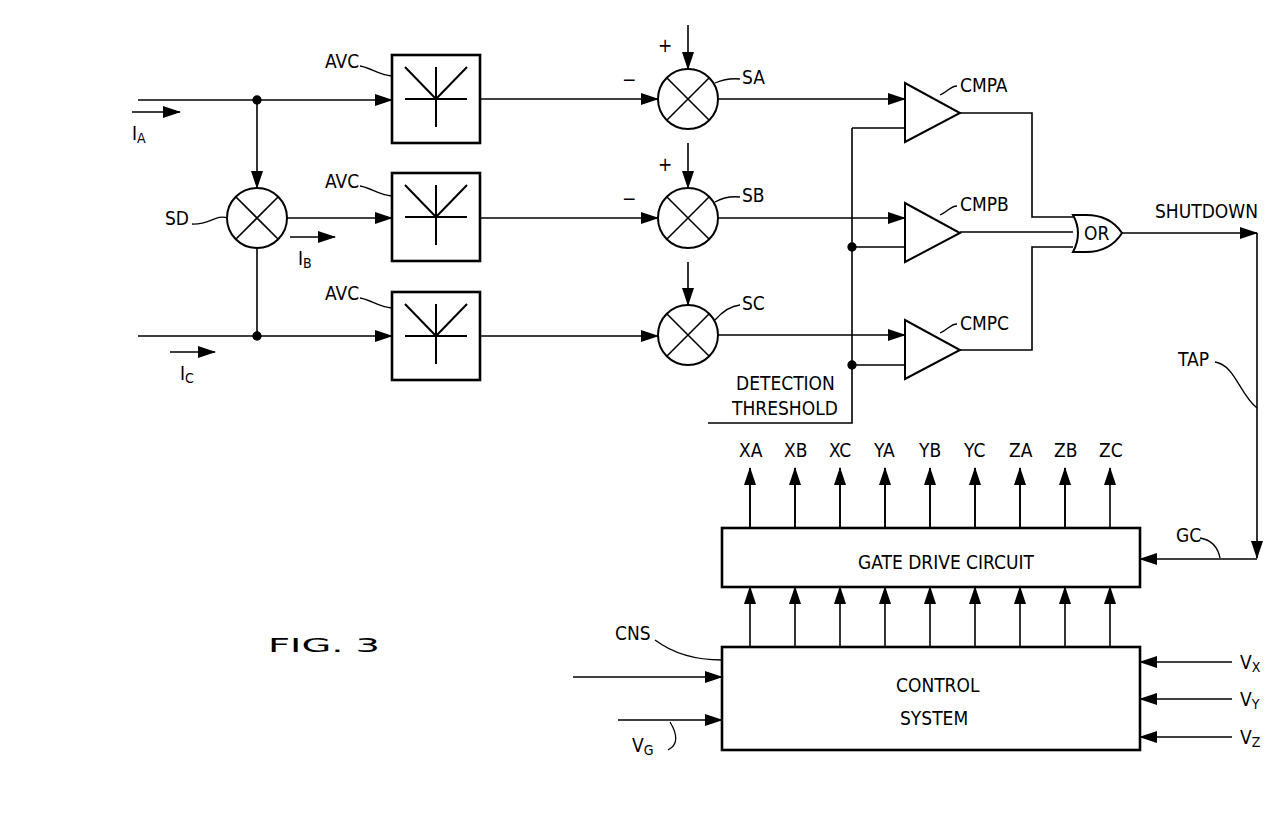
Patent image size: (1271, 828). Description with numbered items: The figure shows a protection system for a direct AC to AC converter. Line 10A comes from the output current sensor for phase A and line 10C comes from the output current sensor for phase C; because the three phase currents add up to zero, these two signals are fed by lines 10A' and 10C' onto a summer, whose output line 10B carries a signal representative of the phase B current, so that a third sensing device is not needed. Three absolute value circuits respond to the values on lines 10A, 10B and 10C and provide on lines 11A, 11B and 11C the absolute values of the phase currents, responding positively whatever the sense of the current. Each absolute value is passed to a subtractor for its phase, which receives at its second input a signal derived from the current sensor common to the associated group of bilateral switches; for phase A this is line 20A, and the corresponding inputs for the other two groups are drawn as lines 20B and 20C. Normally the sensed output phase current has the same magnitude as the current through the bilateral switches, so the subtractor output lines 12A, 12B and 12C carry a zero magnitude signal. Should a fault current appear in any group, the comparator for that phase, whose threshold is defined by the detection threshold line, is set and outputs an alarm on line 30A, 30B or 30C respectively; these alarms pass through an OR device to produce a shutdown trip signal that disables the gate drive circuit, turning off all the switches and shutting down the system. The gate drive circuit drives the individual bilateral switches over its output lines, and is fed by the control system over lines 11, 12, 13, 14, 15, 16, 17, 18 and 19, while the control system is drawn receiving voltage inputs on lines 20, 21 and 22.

The line 10A is at (324, 117).
The line 10A' is at (218, 144).
The line 10B is at (346, 218).
The line 10C is at (324, 349).
The line 10C' is at (220, 292).
The line 11A is at (514, 100).
The line 11B is at (514, 219).
The line 11C is at (514, 337).
The output line 12A is at (782, 100).
The output line 12B is at (782, 219).
The output line 12C is at (782, 335).
The line 20A is at (690, 32).
The reference input B 20B is at (690, 150).
The reference input C 20C is at (690, 268).
The line 30A is at (1032, 180).
The line 30B is at (1000, 236).
The line 30C is at (1032, 297).
The control signal line to gate drive 11 is at (750, 632).
The control signal line to gate drive 12 is at (795, 633).
The control signal line to gate drive 13 is at (840, 633).
The control signal line to gate drive 14 is at (885, 633).
The control signal line to gate drive 15 is at (930, 633).
The control signal line to gate drive 16 is at (975, 633).
The control signal line to gate drive 17 is at (1020, 633).
The control signal line to gate drive 18 is at (1065, 633).
The control signal line to gate drive 19 is at (1110, 632).
The voltage input VX line 20 is at (1186, 662).
The voltage input VY line 21 is at (1180, 699).
The voltage input VZ line 22 is at (1184, 737).